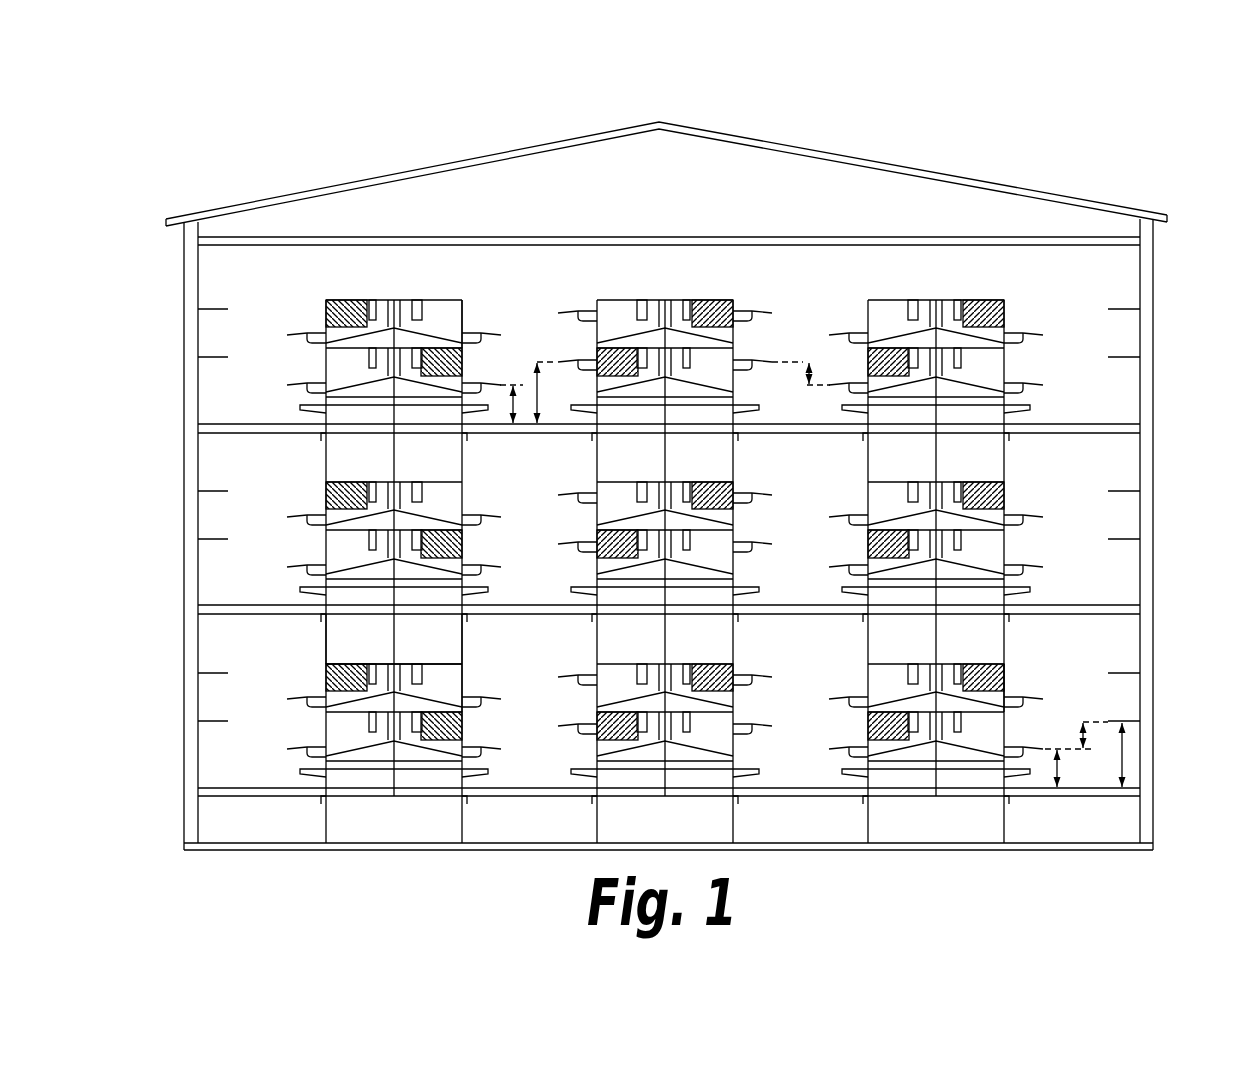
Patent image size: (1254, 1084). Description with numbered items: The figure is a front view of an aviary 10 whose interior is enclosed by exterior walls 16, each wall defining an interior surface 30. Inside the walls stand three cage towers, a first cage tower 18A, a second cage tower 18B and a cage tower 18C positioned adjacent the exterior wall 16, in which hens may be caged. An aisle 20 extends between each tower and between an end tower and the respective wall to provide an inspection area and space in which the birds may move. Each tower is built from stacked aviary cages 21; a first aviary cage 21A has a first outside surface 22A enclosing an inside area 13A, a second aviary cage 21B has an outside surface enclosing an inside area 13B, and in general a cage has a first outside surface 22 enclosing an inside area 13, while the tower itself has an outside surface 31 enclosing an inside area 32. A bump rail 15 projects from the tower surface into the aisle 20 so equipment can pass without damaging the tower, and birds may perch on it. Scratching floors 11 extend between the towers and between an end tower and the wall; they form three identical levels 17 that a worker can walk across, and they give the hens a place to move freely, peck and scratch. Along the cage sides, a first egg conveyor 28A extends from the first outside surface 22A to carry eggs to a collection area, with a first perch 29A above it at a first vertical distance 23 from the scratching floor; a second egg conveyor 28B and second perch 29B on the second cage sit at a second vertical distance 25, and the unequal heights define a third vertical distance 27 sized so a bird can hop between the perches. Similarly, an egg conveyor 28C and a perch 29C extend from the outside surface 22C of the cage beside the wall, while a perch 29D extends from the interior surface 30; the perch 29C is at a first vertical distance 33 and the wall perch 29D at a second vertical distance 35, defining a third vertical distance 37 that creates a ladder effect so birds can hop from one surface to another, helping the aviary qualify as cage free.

The aviary 10 is at (1127, 118).
The scratching floor 11 is at (259, 797).
The inside area 13 is at (452, 680).
The inside area 13A is at (444, 318).
The inside area 13B is at (612, 318).
The bump rail 15 is at (488, 778).
The exterior wall 16 is at (184, 477).
The level 17 is at (1165, 253).
The first cage tower 18A is at (415, 278).
The second cage tower 18B is at (689, 278).
The cage tower 18C is at (961, 278).
The aisle 20 is at (275, 504).
The aviary cage 21 is at (503, 667).
The first aviary cage 21A is at (283, 305).
The second aviary cage 21B is at (775, 412).
The first outside surface 22 is at (462, 686).
The first outside surface 22A is at (463, 312).
The outside surface 22C is at (1005, 680).
The first vertical distance 23 is at (512, 403).
The second vertical distance 25 is at (538, 386).
The third vertical distance 27 is at (807, 372).
The first egg conveyor 28A is at (473, 388).
The second egg conveyor 28B is at (589, 369).
The egg conveyor 28C is at (1010, 747).
The first perch 29A is at (500, 383).
The second perch 29B is at (573, 361).
The perch 29C is at (1043, 748).
The second perch 29D is at (213, 309).
The interior surface 30 is at (1140, 256).
The outside surface 31 is at (462, 651).
The inside area 32 is at (442, 643).
The first vertical distance 33 is at (1056, 772).
The second vertical distance 35 is at (1123, 750).
The third vertical distance 37 is at (1087, 738).